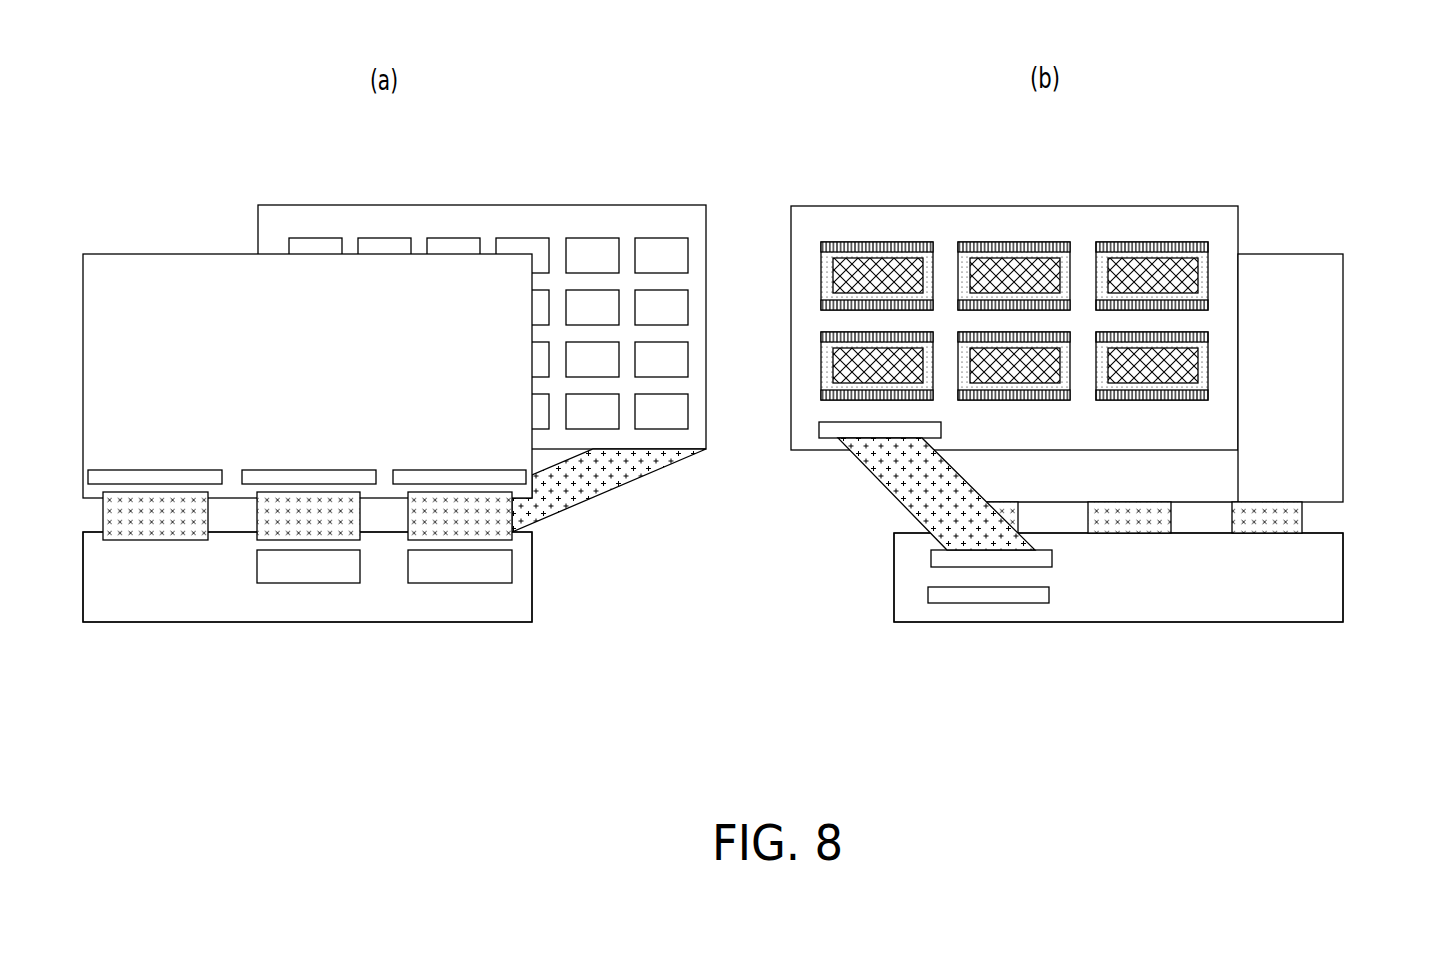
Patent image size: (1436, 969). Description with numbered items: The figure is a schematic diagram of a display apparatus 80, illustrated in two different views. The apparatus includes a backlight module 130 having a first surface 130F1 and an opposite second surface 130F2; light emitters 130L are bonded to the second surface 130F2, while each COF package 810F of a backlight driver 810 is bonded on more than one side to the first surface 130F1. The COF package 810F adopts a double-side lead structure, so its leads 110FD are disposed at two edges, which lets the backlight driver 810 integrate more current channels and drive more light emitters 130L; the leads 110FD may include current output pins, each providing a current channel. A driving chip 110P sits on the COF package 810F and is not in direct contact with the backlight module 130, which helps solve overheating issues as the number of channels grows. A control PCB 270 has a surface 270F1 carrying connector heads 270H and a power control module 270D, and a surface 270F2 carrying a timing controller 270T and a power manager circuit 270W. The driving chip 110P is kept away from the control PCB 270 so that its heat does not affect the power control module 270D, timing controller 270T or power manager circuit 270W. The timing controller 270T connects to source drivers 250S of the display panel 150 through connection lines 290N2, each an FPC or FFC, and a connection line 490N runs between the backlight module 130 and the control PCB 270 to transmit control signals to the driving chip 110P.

The display apparatus 80 is at (148, 100).
The backlight module 130 is at (748, 263).
The first surface of the backlight module 130F1 is at (990, 292).
The second surface of the backlight module 130F2 is at (665, 213).
The light emitters 130L is at (315, 243).
The leads 110FD is at (823, 242).
The driving chip 110P is at (1023, 263).
The backlight driver 810 is at (990, 252).
The COF package 810F is at (1208, 278).
The display panel 150 is at (140, 258).
The source drivers 250S is at (153, 477).
The connection line 490N is at (597, 482).
The connection lines 290N2 is at (153, 540).
The control PCB 270 is at (713, 651).
The surface of the control PCB 270F1 is at (905, 597).
The surface of the control PCB 270F2 is at (522, 595).
The timing controller 270T is at (275, 577).
The power manager circuit 270W is at (427, 577).
The connector heads 270H is at (1010, 560).
The power control module 270D is at (943, 598).